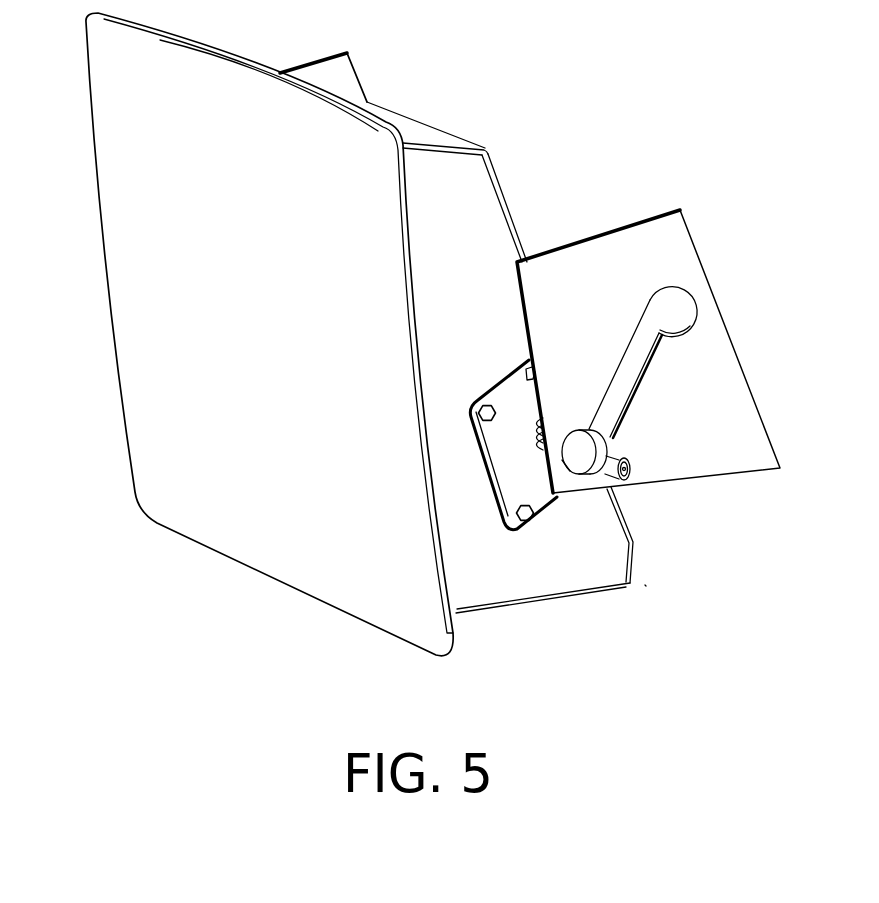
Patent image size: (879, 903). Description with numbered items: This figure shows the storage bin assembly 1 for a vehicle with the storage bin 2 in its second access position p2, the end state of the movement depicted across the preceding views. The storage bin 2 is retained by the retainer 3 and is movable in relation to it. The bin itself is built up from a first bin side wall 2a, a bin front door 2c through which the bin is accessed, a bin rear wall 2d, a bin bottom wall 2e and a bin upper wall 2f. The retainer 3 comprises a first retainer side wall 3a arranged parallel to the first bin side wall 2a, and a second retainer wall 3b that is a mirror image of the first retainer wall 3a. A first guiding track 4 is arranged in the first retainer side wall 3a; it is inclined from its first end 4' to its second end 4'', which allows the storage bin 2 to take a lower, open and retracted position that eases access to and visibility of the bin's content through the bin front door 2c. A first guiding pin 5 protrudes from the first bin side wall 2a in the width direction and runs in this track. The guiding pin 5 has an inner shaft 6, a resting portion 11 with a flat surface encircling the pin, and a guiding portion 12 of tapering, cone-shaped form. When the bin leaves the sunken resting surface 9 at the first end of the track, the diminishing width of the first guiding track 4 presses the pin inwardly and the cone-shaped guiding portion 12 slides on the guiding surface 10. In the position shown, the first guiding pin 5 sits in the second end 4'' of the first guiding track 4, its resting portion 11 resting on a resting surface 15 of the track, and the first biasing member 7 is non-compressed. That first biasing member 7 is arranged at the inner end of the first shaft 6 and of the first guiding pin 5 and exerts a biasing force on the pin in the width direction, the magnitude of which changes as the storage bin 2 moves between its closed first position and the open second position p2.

The storage bin assembly 1 is at (603, 93).
The storage bin 2 is at (530, 215).
The first bin side wall 2a is at (462, 192).
The bin front door 2c is at (155, 218).
The bin rear wall 2d is at (470, 137).
The bin bottom wall 2e is at (527, 600).
The bin upper wall 2f is at (413, 137).
The retainer 3 is at (695, 221).
The first retainer side wall 3a is at (663, 267).
The second retainer wall 3b is at (317, 80).
The first guiding track 4 is at (701, 364).
The first end of the guiding track 4' is at (725, 300).
The second end of the guiding track 4'' is at (629, 322).
The first guiding pin 5 is at (645, 430).
The inner shaft 6 is at (562, 460).
The first biasing member 7 is at (550, 478).
The resting surface 9 is at (677, 332).
The guiding surface 10 is at (632, 397).
The resting portion 11 is at (607, 490).
The guiding portion 12 is at (597, 453).
The resting surface of the first guiding track 15 is at (543, 448).
The second position p2 is at (658, 593).